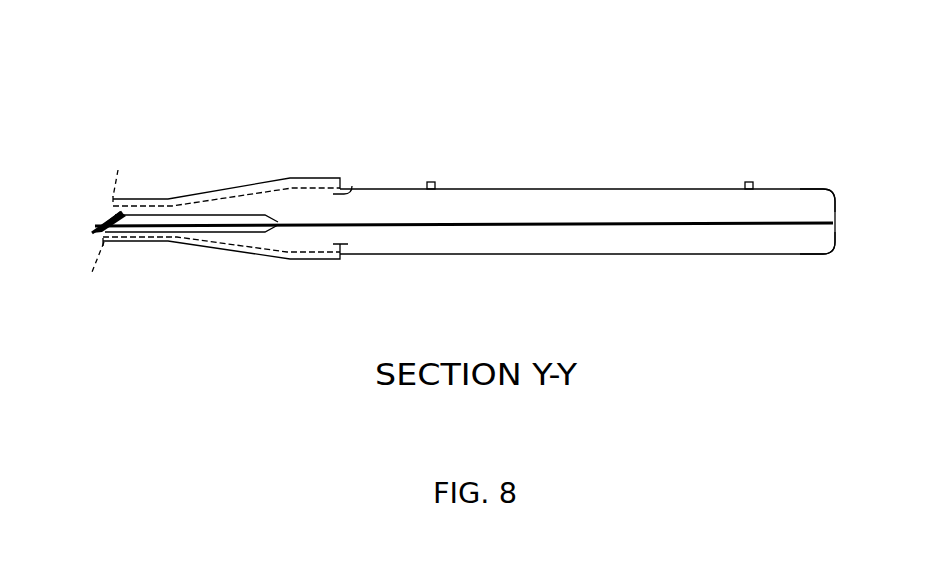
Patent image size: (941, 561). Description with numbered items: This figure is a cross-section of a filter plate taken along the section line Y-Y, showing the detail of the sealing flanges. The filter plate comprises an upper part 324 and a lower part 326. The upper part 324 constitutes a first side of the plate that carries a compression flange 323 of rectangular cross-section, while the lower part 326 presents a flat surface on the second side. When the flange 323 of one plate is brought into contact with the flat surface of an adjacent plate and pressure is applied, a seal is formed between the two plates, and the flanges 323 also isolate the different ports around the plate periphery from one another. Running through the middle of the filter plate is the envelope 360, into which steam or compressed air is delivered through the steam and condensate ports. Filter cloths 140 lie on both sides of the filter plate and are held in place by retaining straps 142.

The filter cloth 140 is at (167, 240).
The retaining strap 142 is at (352, 186).
The compression flange 323 is at (435, 183).
The upper part 324 is at (835, 202).
The lower part 326 is at (835, 236).
The envelope 360 is at (217, 217).